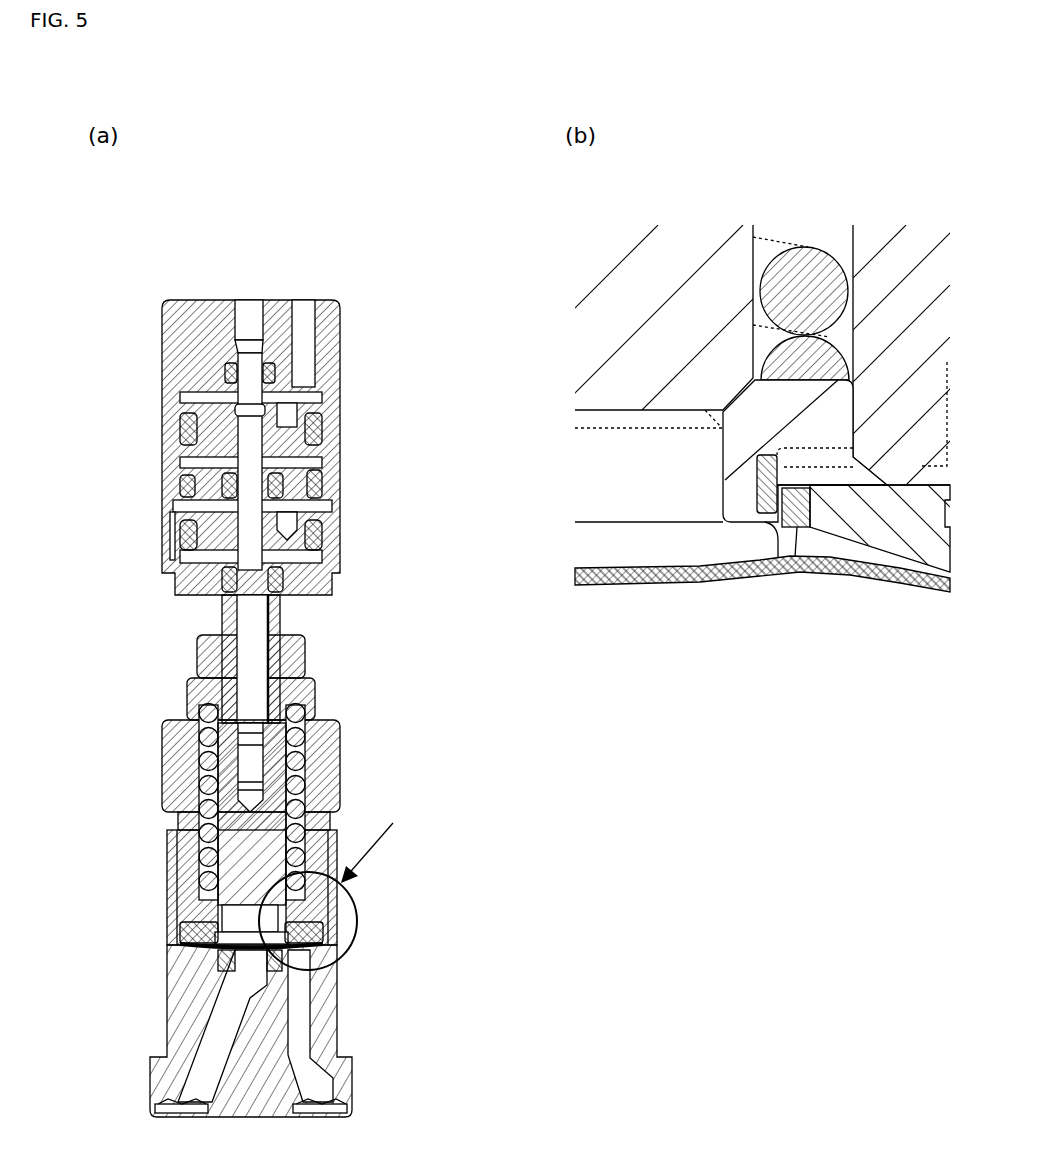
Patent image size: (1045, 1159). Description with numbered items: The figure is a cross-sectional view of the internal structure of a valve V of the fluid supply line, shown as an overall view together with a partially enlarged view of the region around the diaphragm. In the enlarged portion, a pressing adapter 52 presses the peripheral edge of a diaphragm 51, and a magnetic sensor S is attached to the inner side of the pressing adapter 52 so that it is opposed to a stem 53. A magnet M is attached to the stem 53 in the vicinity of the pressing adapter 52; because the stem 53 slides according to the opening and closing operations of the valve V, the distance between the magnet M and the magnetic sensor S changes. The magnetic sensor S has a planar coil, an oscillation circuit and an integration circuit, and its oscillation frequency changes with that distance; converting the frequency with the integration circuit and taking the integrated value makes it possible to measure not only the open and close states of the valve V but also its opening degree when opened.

The valve V is at (161, 292).
The diaphragm 51 is at (668, 585).
The pressing adapter 52 is at (832, 550).
The stem 53 is at (855, 410).
The magnet M is at (757, 478).
The magnetic sensor S is at (797, 530).